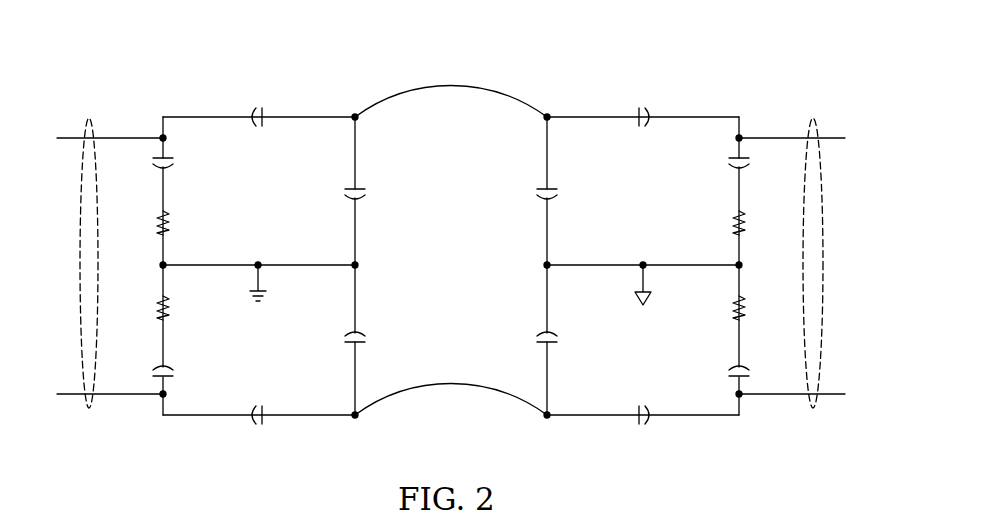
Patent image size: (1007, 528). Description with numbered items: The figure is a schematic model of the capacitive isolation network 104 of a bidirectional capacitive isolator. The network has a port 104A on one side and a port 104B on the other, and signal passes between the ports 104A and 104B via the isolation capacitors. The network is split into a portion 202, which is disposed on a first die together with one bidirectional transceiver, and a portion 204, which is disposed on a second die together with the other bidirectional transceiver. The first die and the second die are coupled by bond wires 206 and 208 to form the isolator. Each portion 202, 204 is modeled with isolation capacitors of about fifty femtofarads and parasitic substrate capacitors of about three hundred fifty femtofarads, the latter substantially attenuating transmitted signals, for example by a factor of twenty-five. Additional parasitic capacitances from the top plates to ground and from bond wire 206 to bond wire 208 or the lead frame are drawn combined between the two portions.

The capacitive isolation network 104 is at (770, 58).
The port 104A is at (90, 405).
The port 104B is at (813, 408).
The portion of the capacitive isolation network 202 is at (350, 468).
The portion of the capacitive isolation network 204 is at (787, 468).
The bond wire 206 is at (449, 84).
The bond wire 208 is at (450, 387).